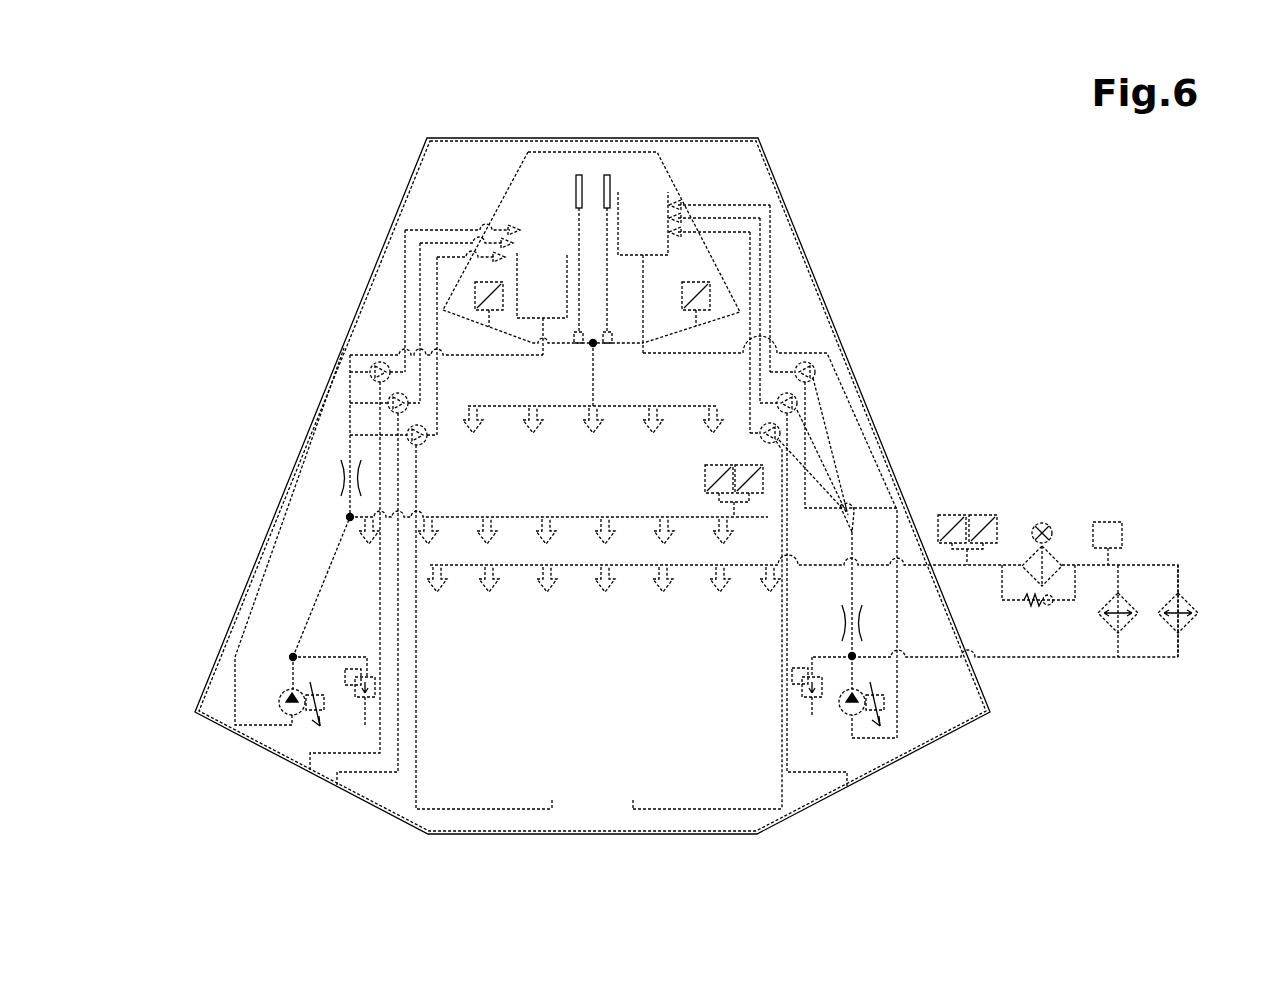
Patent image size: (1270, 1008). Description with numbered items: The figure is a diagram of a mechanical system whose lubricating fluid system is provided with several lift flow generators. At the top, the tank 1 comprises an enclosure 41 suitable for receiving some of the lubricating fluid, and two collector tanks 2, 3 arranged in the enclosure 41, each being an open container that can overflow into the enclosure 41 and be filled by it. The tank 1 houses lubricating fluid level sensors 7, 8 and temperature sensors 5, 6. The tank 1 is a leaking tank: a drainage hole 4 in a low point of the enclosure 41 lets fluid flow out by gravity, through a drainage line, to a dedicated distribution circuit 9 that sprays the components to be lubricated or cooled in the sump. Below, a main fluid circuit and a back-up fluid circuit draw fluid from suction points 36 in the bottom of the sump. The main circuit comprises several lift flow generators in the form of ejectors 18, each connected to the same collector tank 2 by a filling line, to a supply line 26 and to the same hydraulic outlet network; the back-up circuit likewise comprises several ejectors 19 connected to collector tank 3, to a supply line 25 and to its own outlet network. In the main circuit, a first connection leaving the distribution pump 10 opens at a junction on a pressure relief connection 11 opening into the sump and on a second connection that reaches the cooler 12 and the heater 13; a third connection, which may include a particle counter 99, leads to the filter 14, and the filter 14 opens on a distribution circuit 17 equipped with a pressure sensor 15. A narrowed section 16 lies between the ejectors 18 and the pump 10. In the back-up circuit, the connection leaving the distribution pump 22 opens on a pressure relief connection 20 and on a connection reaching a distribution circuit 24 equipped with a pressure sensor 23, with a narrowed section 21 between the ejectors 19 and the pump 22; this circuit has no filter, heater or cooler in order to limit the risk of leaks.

The tank 1 is at (591, 211).
The collector tank 2 is at (673, 197).
The collector tank 3 is at (567, 272).
The drainage hole 4 is at (593, 343).
The temperature sensor 5 is at (682, 296).
The temperature sensor 6 is at (475, 298).
The lubricating fluid level sensor 7 is at (578, 173).
The lubricating fluid level sensor 8 is at (607, 173).
The dedicated distribution circuit 9 is at (718, 406).
The distribution pump 10 is at (857, 693).
The pressure relief connection 11 is at (810, 658).
The cooler 12 is at (1187, 627).
The heater 13 is at (1127, 625).
The filter 14 is at (1038, 527).
The pressure sensor 15 is at (988, 515).
The narrowed section 16 is at (847, 622).
The distribution circuit 17 is at (818, 564).
The ejector 18 is at (815, 401).
The ejector 19 is at (367, 386).
The pressure relief connection 20 is at (375, 682).
The narrowed section 21 is at (340, 477).
The distribution pump 22 is at (278, 695).
The pressure sensor 23 is at (705, 488).
The distribution circuit 24 is at (455, 517).
The supply line 25 is at (515, 809).
The supply line 26 is at (722, 809).
The suction point 36 is at (552, 809).
The enclosure 41 is at (507, 195).
The particle counter 99 is at (1112, 522).